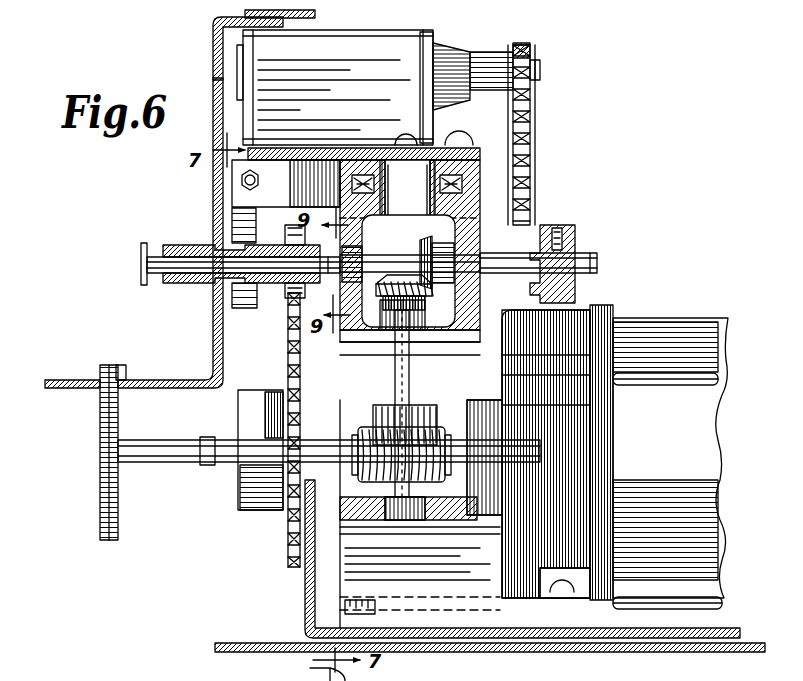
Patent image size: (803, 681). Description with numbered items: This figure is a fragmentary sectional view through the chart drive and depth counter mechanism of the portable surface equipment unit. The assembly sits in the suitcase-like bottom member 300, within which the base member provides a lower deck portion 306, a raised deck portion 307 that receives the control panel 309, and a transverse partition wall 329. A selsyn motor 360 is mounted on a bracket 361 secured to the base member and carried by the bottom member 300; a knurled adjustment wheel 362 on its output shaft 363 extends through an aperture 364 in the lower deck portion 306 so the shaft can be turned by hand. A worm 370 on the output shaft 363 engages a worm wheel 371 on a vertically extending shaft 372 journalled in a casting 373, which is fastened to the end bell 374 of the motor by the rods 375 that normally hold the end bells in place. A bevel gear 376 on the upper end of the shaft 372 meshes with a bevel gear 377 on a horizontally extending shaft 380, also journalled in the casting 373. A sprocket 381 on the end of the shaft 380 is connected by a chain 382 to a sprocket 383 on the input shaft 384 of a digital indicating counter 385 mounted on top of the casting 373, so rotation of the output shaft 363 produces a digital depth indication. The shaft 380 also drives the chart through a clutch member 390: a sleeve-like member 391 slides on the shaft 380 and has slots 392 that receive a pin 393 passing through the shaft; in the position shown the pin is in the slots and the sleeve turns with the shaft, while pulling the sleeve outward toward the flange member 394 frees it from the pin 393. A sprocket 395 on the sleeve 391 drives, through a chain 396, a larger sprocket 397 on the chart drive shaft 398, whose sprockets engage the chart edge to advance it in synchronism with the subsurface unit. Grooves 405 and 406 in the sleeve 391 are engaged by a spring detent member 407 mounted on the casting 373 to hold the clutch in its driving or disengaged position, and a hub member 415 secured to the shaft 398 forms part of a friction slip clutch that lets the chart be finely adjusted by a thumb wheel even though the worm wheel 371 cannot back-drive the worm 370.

The bottom member 300 is at (565, 652).
The lower deck portion 306 is at (95, 380).
The raised deck portion 307 is at (218, 20).
The control panel 309 is at (300, 14).
The transverse partition wall 329 is at (213, 104).
The selsyn motor 360 is at (686, 330).
The bracket 361 is at (305, 607).
The knurled adjustment wheel 362 is at (100, 513).
The output shaft 363 is at (172, 446).
The aperture 364 is at (121, 378).
The worm 370 is at (440, 418).
The worm wheel 371 is at (362, 450).
The vertically extending shaft 372 is at (395, 365).
The casting 373 is at (478, 210).
The end bell 374 is at (603, 305).
The rods 375 is at (705, 380).
The bevel gear 376 is at (418, 296).
The bevel gear 377 is at (428, 252).
The horizontally extending shaft 380 is at (588, 262).
The sprocket 381 is at (532, 226).
The chain 382 is at (532, 142).
The sprocket 383 is at (534, 56).
The input shaft 384 is at (540, 70).
The digital indicating counter 385 is at (420, 42).
The clutch member 390 is at (170, 243).
The sleeve-like member 391 is at (192, 285).
The slots 392 is at (362, 262).
The pin 393 is at (300, 300).
The flange member 394 is at (141, 250).
The sprocket 395 is at (288, 316).
The chain 396 is at (287, 358).
The larger sprocket 397 is at (288, 535).
The chart drive shaft 398 is at (212, 466).
The groove 405 is at (245, 284).
The groove 406 is at (266, 244).
The spring detent member 407 is at (232, 205).
The hub member 415 is at (246, 512).